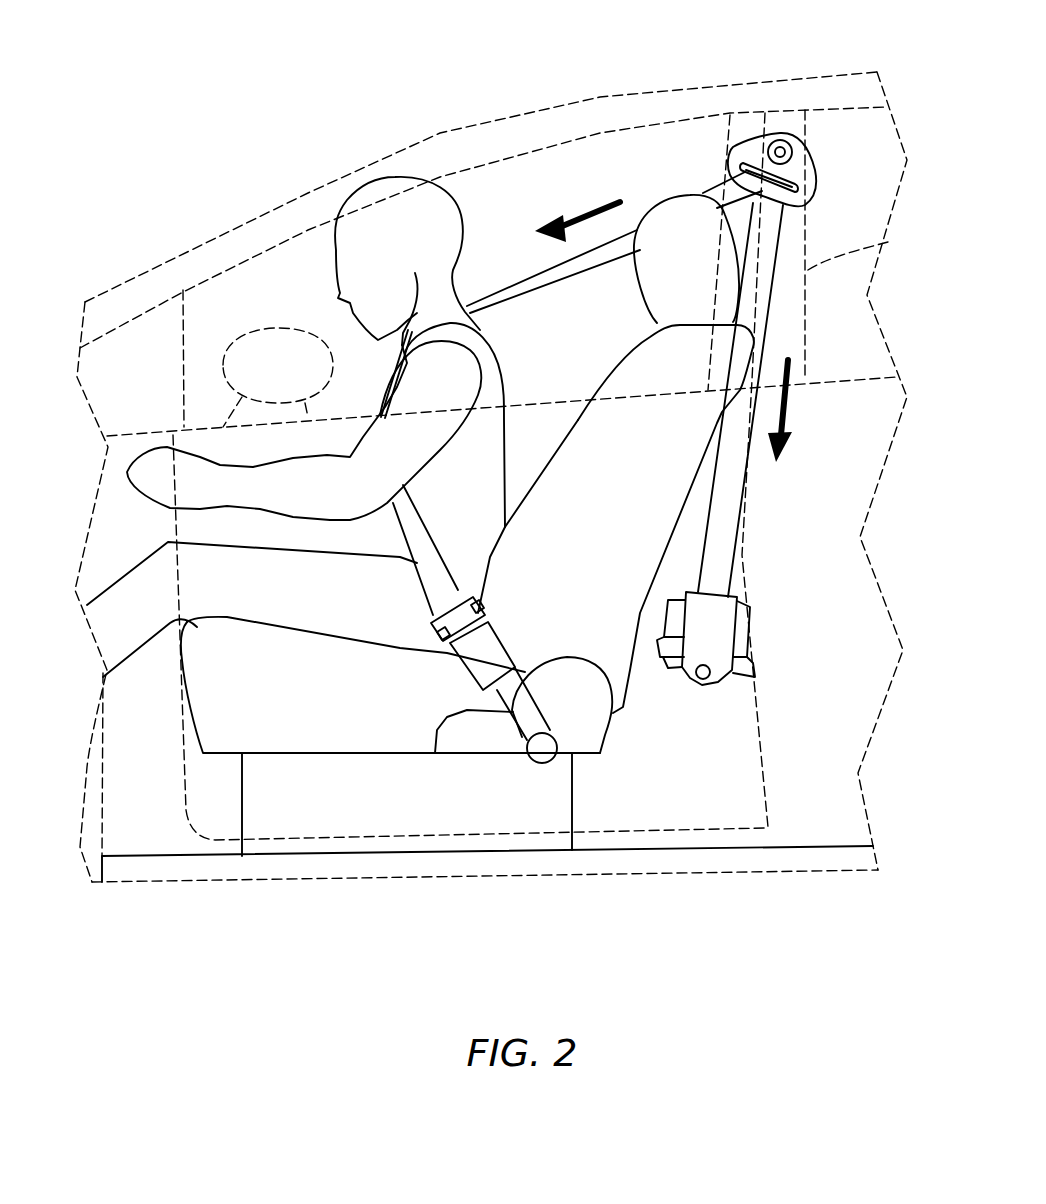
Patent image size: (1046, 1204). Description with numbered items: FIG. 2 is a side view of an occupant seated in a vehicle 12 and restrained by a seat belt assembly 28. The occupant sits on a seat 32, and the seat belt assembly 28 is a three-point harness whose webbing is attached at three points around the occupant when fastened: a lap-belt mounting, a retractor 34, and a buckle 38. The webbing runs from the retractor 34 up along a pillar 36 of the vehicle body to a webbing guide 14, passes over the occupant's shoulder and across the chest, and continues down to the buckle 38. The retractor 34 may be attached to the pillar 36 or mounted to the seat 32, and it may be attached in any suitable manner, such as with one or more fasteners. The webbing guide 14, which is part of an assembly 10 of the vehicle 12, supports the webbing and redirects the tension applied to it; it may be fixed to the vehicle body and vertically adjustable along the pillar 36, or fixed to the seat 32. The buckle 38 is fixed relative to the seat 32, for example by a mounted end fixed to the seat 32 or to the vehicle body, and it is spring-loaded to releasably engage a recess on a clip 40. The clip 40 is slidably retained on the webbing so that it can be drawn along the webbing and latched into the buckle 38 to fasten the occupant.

The assembly 10 is at (750, 136).
The vehicle 12 is at (832, 58).
The webbing guide 14 is at (812, 178).
The seat belt assembly 28 is at (711, 149).
The seat 32 is at (628, 729).
The retractor 34 is at (717, 638).
The pillar 36 is at (888, 242).
The buckle 38 is at (482, 668).
The clip 40 is at (488, 607).